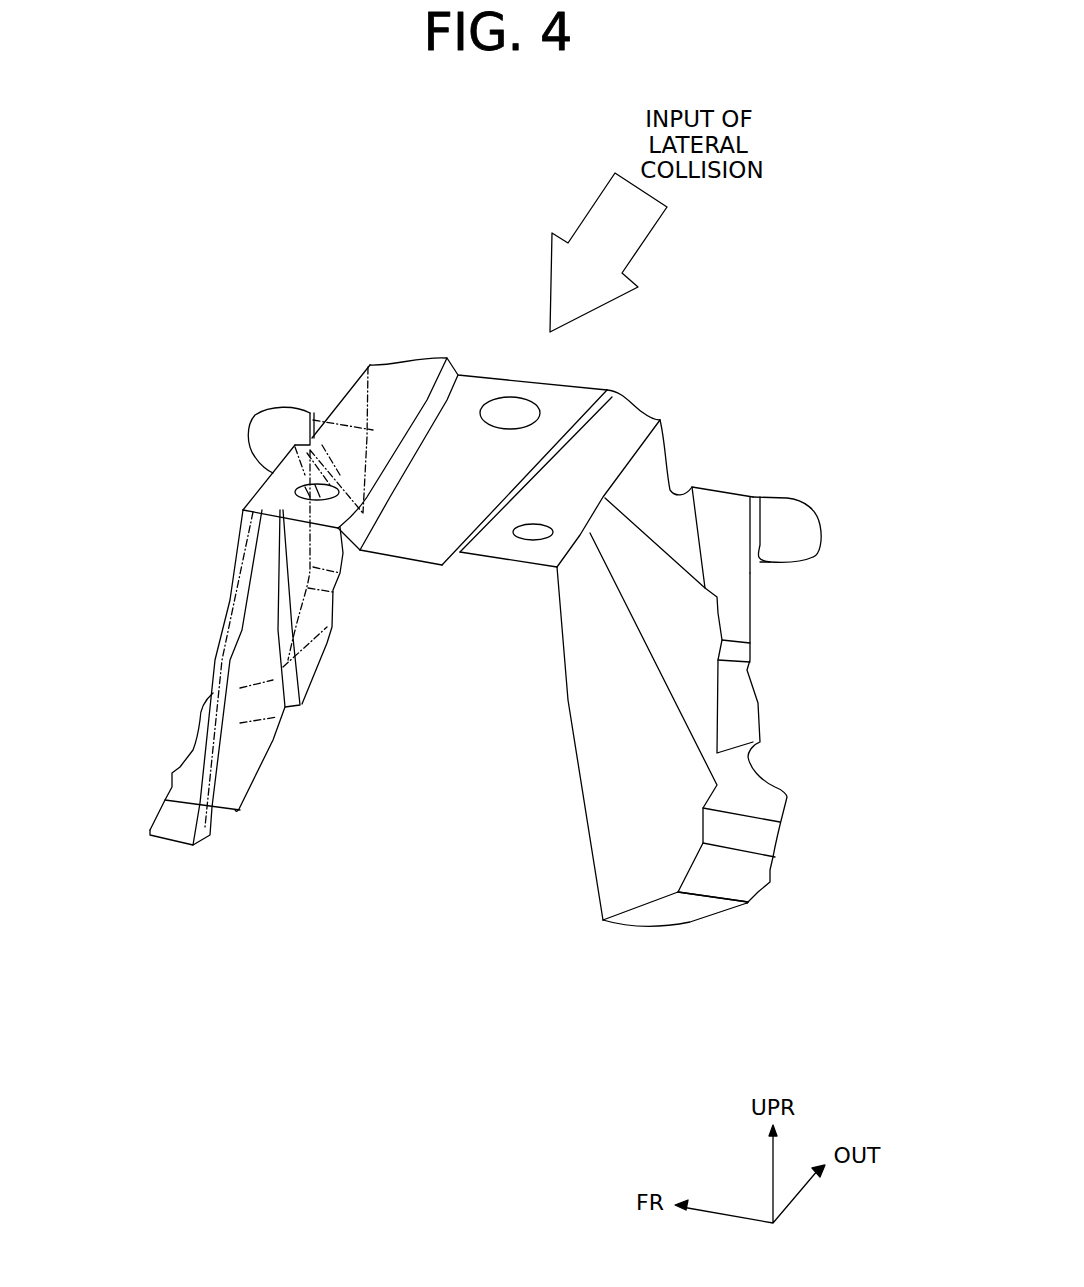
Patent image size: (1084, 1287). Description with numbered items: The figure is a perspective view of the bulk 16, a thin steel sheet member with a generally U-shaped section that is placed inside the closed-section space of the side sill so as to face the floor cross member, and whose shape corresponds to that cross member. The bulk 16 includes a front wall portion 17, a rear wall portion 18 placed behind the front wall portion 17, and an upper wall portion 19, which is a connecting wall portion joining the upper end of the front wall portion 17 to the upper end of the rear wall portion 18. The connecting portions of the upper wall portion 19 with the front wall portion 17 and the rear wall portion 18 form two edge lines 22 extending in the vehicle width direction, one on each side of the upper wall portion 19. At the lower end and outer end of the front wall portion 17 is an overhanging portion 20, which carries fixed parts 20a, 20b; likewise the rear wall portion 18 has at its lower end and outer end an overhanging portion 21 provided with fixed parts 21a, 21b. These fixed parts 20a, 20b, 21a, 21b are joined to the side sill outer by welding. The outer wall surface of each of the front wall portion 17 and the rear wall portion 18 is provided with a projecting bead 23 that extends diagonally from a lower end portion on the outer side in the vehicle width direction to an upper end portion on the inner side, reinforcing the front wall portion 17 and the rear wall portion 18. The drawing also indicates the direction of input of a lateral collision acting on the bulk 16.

The bulk 16 is at (355, 300).
The front wall portion 17 is at (257, 670).
The rear wall portion 18 is at (593, 770).
The upper wall portion 19 is at (477, 390).
The overhanging portion 20 is at (160, 825).
The fixed part 20a is at (265, 430).
The fixed part 20b is at (197, 767).
The overhanging portion 21 is at (786, 797).
The fixed part 21a is at (833, 530).
The fixed part 21b is at (733, 890).
The edge line 22 is at (347, 378).
The bead 23 is at (300, 487).